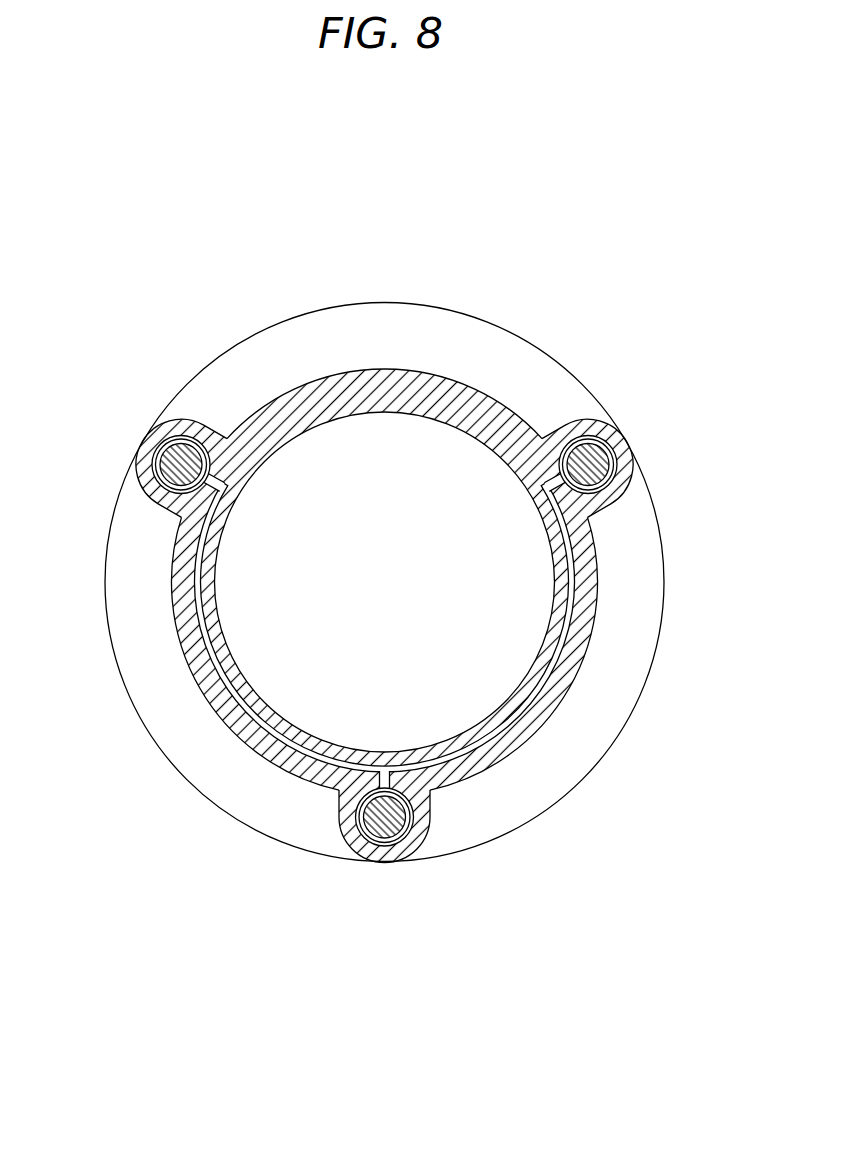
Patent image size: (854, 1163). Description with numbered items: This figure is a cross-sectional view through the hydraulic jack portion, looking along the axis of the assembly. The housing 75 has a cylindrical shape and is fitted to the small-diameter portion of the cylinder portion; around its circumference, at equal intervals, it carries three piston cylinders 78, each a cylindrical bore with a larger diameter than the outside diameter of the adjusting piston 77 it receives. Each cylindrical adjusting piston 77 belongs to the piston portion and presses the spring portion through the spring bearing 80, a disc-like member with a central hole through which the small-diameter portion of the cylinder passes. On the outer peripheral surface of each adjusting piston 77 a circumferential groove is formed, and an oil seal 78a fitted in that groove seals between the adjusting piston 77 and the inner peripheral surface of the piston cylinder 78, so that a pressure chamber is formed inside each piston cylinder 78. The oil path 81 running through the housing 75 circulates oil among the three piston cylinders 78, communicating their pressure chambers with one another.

The spring bearing 80 is at (405, 323).
The housing 75 is at (492, 403).
The oil path 81 is at (220, 682).
The piston cylinder 78 is at (157, 492).
The oil seal 78a is at (163, 452).
The adjusting piston 77 is at (192, 457).